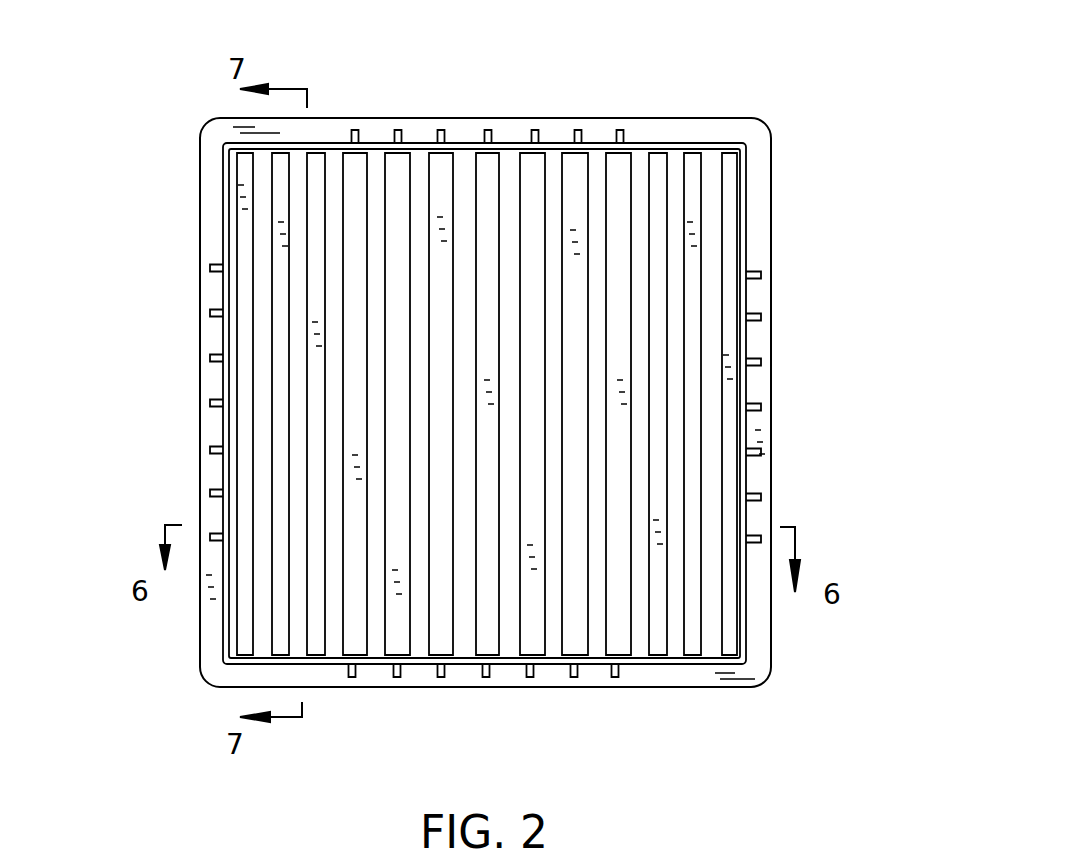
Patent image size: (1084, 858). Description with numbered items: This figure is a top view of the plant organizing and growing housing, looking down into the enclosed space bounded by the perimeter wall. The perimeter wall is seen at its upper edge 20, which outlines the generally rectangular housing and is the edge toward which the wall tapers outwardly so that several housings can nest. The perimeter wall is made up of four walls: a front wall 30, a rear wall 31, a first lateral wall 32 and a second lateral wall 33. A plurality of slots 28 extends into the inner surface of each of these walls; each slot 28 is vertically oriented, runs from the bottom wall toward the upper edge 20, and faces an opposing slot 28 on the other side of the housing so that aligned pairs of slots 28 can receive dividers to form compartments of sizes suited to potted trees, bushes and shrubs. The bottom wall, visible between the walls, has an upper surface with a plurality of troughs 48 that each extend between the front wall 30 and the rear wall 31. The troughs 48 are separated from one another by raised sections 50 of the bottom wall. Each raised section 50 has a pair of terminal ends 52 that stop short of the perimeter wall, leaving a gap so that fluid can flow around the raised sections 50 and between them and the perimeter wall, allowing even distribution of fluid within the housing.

The upper edge 20 is at (472, 394).
The slots 28 is at (355, 133).
The front wall 30 is at (602, 688).
The rear wall 31 is at (627, 118).
The first lateral wall 32 is at (770, 433).
The second lateral wall 33 is at (200, 402).
The troughs 48 is at (296, 167).
The raised sections 50 is at (528, 165).
The terminal ends 52 is at (320, 160).